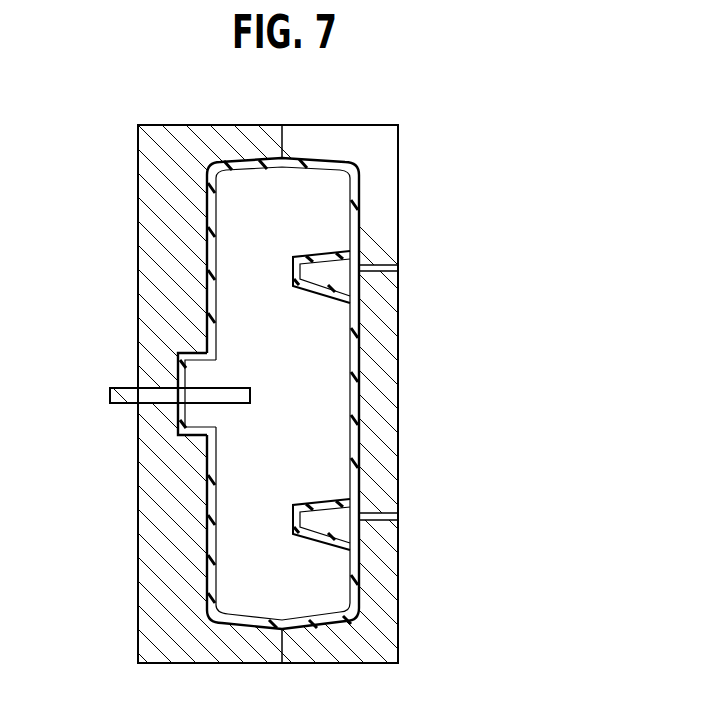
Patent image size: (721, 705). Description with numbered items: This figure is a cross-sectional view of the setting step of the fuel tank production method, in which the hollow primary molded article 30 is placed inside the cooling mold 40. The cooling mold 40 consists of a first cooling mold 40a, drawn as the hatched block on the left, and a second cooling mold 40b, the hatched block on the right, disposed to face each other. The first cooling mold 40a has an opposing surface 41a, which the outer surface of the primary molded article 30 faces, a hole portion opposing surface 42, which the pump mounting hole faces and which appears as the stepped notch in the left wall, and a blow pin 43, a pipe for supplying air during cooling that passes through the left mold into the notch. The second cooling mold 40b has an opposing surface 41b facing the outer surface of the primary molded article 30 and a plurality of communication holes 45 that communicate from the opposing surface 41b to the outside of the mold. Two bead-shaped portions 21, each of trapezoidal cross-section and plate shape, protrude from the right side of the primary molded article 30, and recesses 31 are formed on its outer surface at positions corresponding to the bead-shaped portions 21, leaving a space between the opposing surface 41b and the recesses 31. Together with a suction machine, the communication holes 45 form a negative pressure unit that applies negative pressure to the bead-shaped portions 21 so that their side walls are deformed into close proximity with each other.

The primary molded article 30 is at (318, 163).
The cooling mold 40 is at (521, 156).
The first cooling mold 40a is at (152, 152).
The second cooling mold 40b is at (388, 152).
The opposing surface 41a is at (208, 236).
The opposing surface 41b is at (353, 237).
The hole portion opposing surface 42 is at (190, 371).
The blow pin 43 is at (128, 403).
The communication hole 45 is at (400, 269).
The recess 31 is at (333, 271).
The bead-shaped portion 21 is at (306, 286).